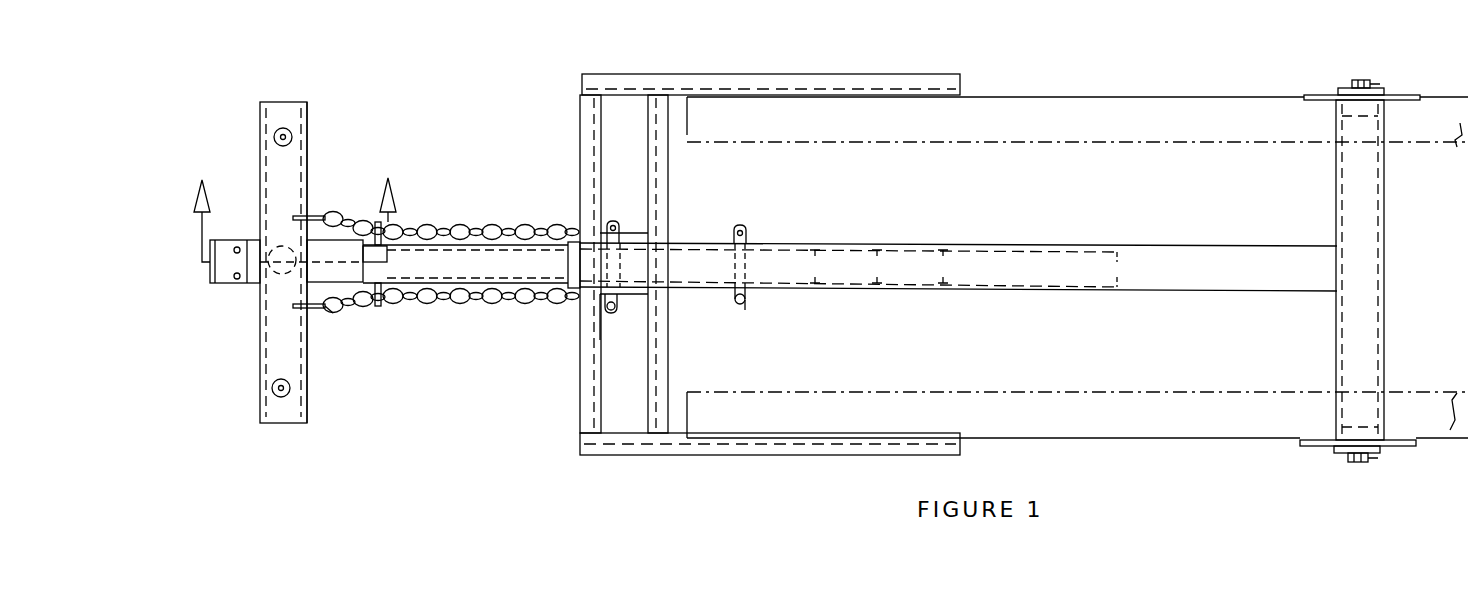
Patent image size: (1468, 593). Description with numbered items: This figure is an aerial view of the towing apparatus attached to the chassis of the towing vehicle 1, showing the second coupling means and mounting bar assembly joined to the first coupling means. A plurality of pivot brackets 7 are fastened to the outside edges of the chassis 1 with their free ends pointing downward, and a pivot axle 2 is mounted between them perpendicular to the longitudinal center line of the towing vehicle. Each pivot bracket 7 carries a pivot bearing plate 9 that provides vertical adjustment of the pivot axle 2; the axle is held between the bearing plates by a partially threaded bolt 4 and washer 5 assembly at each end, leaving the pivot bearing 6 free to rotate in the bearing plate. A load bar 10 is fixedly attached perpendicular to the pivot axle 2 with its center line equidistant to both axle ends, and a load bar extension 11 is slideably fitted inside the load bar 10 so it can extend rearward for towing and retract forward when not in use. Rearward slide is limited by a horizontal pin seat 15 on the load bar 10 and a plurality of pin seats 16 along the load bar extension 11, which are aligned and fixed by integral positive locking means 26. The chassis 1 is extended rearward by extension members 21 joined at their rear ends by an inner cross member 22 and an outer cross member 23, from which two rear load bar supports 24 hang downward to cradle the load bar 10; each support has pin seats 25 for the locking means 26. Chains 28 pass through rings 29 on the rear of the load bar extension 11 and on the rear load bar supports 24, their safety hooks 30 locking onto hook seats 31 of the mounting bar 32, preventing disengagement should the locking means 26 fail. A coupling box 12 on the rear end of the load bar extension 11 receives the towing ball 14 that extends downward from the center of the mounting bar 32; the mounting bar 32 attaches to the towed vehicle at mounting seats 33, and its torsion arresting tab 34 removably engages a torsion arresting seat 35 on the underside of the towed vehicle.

The chassis of the towing vehicle 1 is at (1195, 97).
The pivot axle 2 is at (1385, 240).
The partially threaded bolt 4 is at (1370, 80).
The washer 5 is at (1377, 88).
The pivot bearing 6 is at (294, 217).
The pivot brackets 7 is at (1315, 95).
The pivot bearing plate 9 is at (1345, 88).
The load bar 10 is at (1215, 246).
The load bar extension 11 is at (490, 248).
The coupling box 12 is at (316, 312).
The towing ball 14 is at (278, 280).
The pin seat 15 is at (745, 240).
The pin seats 16 is at (943, 250).
The extension members 21 is at (920, 74).
The inner cross member 22 is at (668, 160).
The outer cross member 23 is at (582, 132).
The rear load bar supports 24 is at (638, 233).
The pin seats 25 is at (620, 222).
The integral positive locking means 26 is at (600, 335).
The chains 28 is at (437, 226).
The rings 29 is at (373, 218).
The safety hooks 30 is at (318, 217).
The hook seats 31 is at (307, 215).
The mounting bar 32 is at (258, 343).
The mounting seats 33 is at (273, 132).
The torsion arresting tab 34 is at (255, 283).
The torsion arresting seat 35 is at (230, 238).